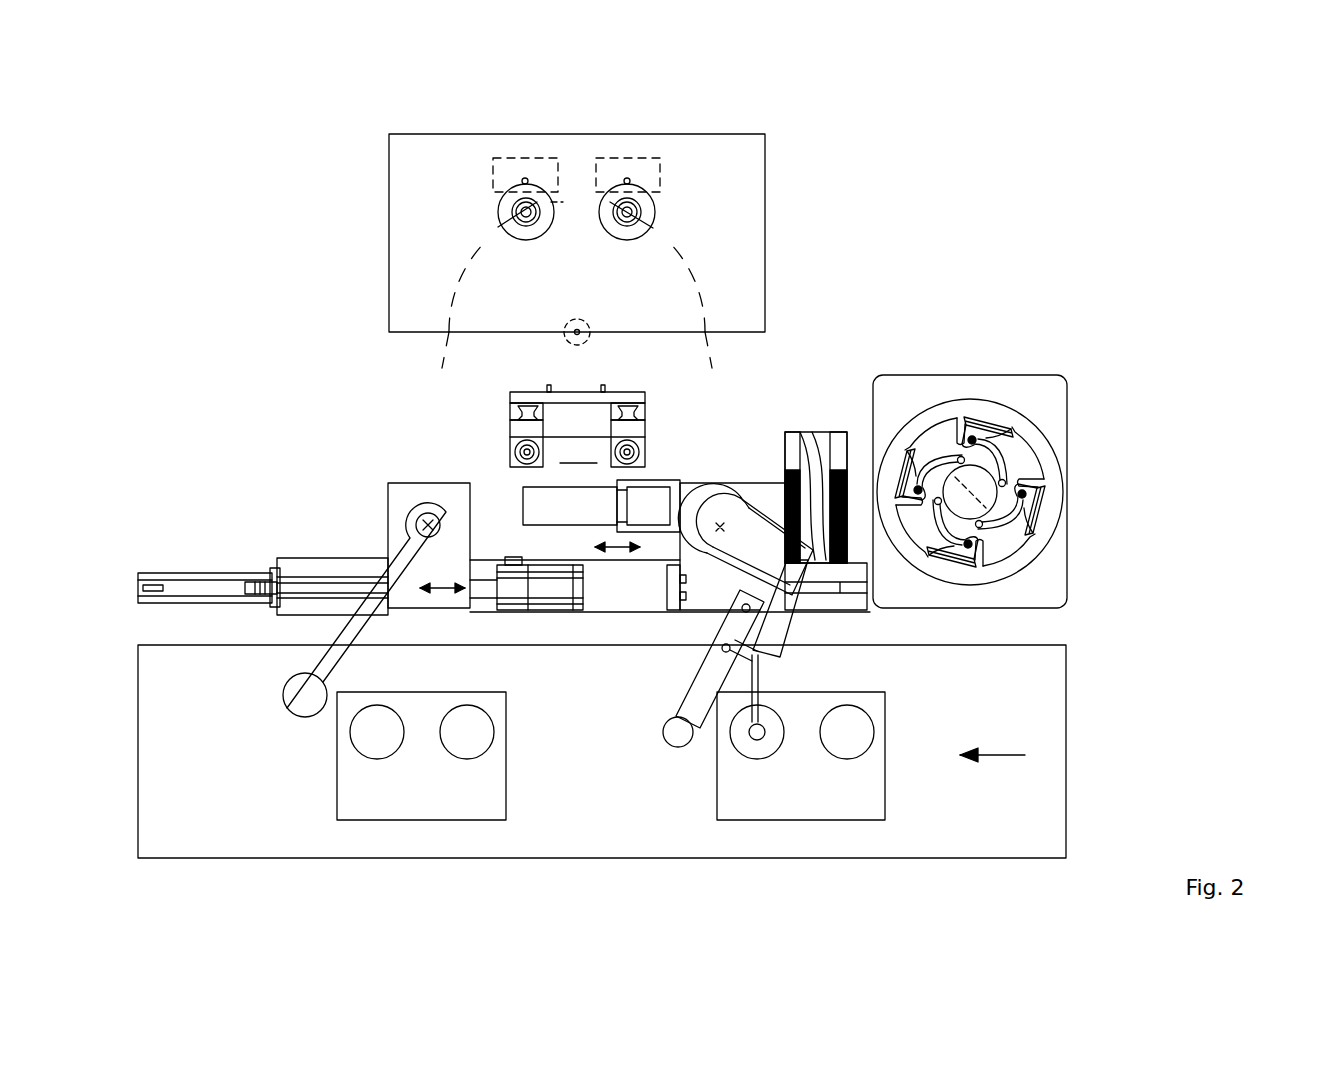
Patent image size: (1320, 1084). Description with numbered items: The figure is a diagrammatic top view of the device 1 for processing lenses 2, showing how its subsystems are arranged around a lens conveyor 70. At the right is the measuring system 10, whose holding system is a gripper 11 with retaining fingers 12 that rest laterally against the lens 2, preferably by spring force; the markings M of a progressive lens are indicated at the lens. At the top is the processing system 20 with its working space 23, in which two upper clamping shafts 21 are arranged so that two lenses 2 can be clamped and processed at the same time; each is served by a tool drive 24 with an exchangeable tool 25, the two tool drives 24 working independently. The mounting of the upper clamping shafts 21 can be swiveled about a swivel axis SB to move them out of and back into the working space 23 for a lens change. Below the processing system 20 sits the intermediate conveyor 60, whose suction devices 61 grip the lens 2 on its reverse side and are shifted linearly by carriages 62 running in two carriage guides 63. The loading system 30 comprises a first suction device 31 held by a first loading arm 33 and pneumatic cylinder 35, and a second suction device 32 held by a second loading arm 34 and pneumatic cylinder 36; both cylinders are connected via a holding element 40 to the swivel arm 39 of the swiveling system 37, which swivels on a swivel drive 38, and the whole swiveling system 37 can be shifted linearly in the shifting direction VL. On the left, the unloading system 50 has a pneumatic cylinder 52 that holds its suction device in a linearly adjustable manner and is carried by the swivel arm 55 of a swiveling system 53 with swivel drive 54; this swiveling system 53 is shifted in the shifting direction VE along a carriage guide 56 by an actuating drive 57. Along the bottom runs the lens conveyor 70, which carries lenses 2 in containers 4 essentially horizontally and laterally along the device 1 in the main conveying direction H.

The device 1 is at (210, 208).
The lens 2 is at (377, 745).
The container 4 is at (422, 795).
The measuring system 10 is at (1012, 446).
The gripper 11 is at (1017, 465).
The retaining finger 12 is at (1005, 505).
The processing system 20 is at (591, 220).
The upper clamping shaft 21 is at (520, 210).
The working space 23 is at (687, 238).
The tool drive 24 is at (536, 150).
The tool 25 is at (522, 180).
The loading system 30 is at (732, 571).
The first suction device 31 is at (745, 745).
The second suction device 32 is at (663, 732).
The first loading arm 33 is at (760, 690).
The second loading arm 34 is at (703, 675).
The pneumatic cylinder 35 is at (795, 628).
The pneumatic cylinder 36 is at (735, 628).
The swiveling system 37 is at (762, 482).
The swivel drive 38 is at (710, 497).
The swivel arm 39 is at (803, 470).
The holding element 40 is at (842, 470).
The unloading system 50 is at (385, 470).
The pneumatic cylinder 52 is at (300, 705).
The swiveling system 53 is at (428, 483).
The swivel drive 54 is at (452, 490).
The swivel arm 55 is at (390, 563).
The carriage guide 56 is at (307, 558).
The actuating drive 57 is at (183, 573).
The intermediate conveyor 60 is at (591, 408).
The suction device 61 is at (614, 452).
The carriage 62 is at (510, 435).
The carriage guide 63 is at (510, 406).
The lens conveyor 70 is at (628, 822).
The swivel axis SB is at (577, 330).
The shifting direction VE is at (445, 595).
The shifting direction VL is at (615, 552).
The marking M is at (1052, 492).
The main conveying direction H is at (1000, 757).